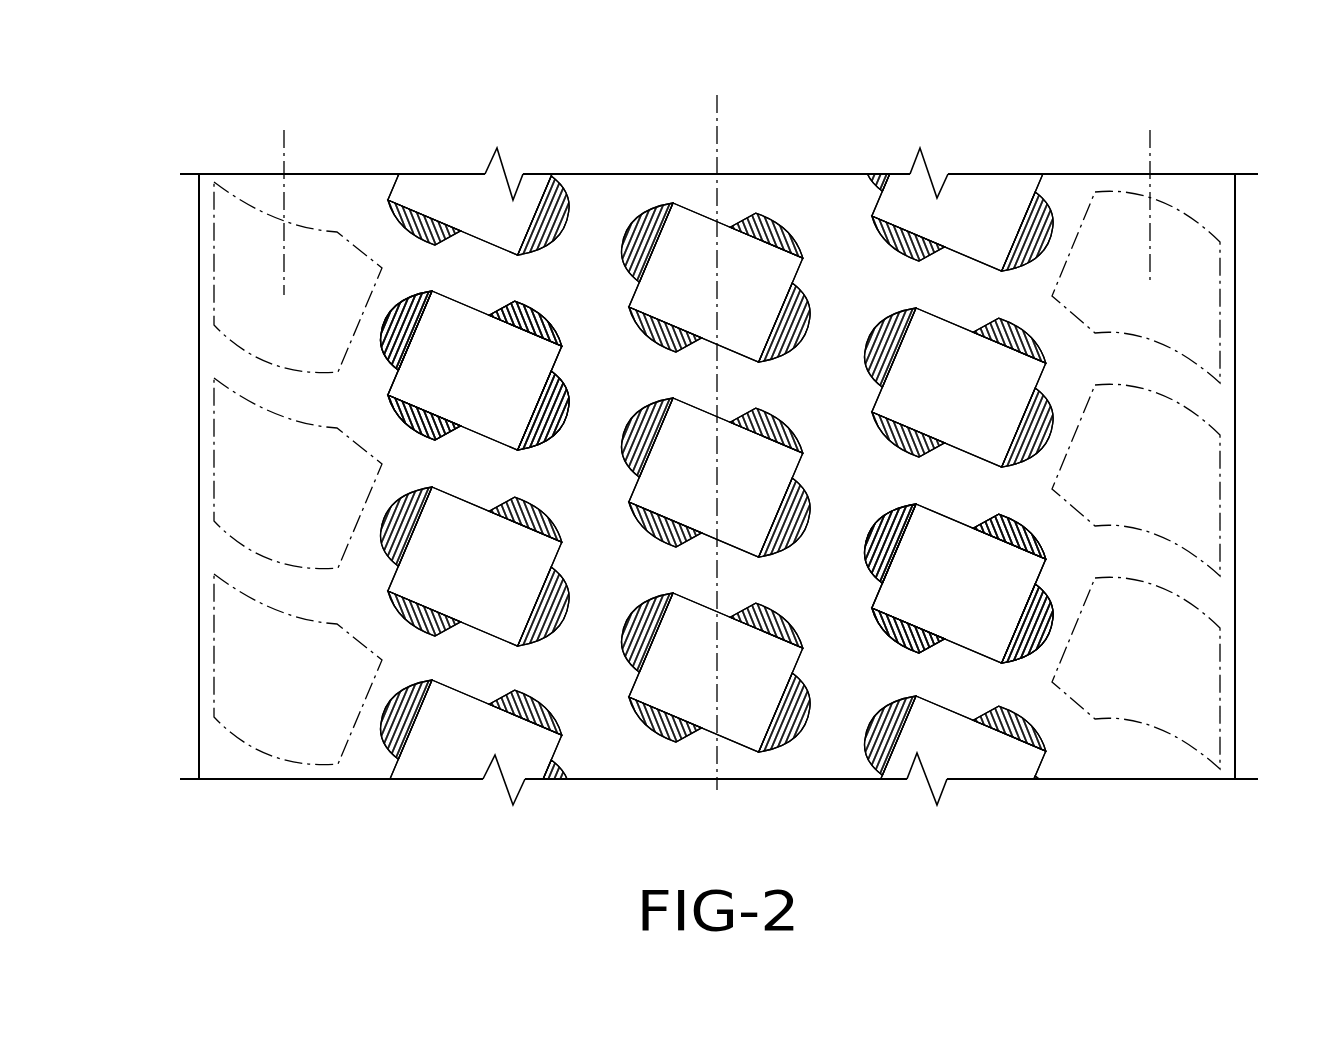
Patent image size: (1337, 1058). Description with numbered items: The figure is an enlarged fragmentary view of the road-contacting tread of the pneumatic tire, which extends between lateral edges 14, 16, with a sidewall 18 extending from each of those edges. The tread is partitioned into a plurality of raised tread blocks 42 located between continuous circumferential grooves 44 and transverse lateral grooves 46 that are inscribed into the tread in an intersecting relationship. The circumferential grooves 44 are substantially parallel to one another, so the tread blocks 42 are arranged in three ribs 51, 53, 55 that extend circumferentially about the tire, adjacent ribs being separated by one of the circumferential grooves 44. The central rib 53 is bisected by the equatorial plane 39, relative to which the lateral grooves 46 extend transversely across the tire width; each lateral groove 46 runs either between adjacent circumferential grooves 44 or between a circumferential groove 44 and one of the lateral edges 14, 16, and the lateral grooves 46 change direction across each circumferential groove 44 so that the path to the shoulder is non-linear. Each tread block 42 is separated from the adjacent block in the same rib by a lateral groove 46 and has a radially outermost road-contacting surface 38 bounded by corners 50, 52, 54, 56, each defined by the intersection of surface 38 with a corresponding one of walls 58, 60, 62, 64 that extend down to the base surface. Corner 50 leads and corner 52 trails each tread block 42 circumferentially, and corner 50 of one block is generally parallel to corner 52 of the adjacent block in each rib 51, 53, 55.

The lateral edge 14 is at (1150, 147).
The lateral edge 16 is at (284, 145).
The sidewall 18 is at (199, 544).
The road-contacting surface 38 is at (757, 293).
The equatorial plane 39 is at (718, 148).
The tread block 42 is at (685, 278).
The circumferential groove 44 is at (566, 205).
The lateral groove 46 is at (968, 308).
The corner 50 is at (463, 303).
The rib 51 is at (445, 165).
The corner 52 is at (484, 442).
The rib 53 is at (672, 163).
The corner 54 is at (388, 386).
The rib 55 is at (988, 164).
The corner 56 is at (563, 359).
The wall 58 is at (520, 315).
The wall 60 is at (403, 432).
The wall 62 is at (401, 314).
The wall 64 is at (568, 403).